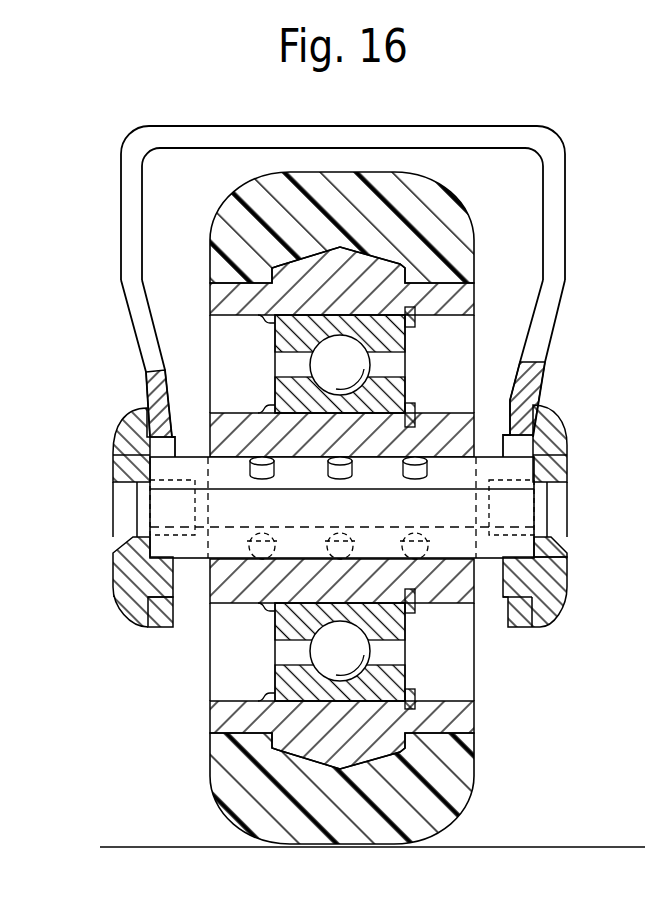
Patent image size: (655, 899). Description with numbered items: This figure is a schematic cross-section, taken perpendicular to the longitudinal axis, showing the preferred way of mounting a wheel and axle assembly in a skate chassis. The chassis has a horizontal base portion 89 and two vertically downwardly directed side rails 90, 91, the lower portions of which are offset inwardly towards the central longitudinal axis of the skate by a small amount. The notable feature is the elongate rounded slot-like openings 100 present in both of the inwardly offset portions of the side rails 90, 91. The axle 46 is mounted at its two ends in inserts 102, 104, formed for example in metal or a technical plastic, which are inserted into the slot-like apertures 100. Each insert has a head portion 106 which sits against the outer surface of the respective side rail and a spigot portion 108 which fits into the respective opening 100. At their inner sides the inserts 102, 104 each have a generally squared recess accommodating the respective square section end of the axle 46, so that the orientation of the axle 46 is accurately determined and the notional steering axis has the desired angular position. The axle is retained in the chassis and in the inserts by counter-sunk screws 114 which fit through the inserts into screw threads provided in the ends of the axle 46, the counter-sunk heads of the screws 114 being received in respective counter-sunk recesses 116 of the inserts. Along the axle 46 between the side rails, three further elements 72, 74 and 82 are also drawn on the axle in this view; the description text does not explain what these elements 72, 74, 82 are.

The axle 46 is at (485, 555).
The rivet 72 is at (262, 457).
The rivet 74 is at (417, 457).
The rivet 82 is at (345, 456).
The horizontal base portion 89 is at (404, 137).
The side rail 90 is at (122, 203).
The side rail 91 is at (565, 203).
The elongate rounded slot-like opening 100 is at (150, 427).
The insert 102 is at (126, 567).
The insert 104 is at (553, 581).
The head portion 106 is at (566, 426).
The spigot portion 108 is at (160, 628).
The counter-sunk screw 114 is at (121, 507).
The counter-sunk recess 116 is at (127, 470).